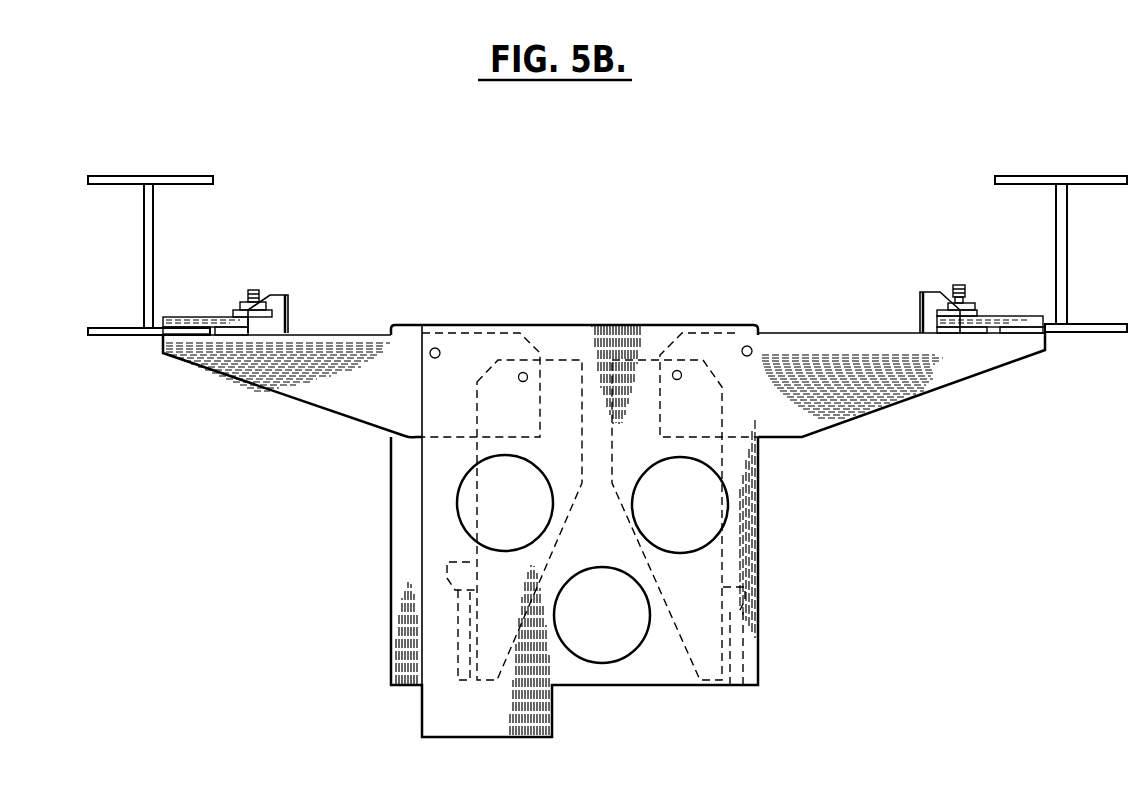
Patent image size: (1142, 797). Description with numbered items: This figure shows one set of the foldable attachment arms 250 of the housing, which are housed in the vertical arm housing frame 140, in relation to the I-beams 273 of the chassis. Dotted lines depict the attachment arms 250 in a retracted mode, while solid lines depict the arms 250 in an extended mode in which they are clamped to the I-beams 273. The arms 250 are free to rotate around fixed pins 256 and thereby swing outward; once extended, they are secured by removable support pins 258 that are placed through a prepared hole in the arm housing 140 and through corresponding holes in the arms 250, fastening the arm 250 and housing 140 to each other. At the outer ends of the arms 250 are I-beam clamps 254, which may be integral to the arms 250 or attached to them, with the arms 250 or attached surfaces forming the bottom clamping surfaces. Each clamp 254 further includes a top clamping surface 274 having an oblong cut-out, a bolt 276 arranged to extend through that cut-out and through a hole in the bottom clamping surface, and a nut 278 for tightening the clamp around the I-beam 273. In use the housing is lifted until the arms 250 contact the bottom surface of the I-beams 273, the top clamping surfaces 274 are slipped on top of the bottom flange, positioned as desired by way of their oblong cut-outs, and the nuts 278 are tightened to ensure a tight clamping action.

The arm housing frame 140 is at (420, 578).
The foldable attachment arms 250 is at (890, 388).
The I-beam clamps 254 is at (303, 278).
The fixed pins 256 is at (521, 382).
The removable support pins 258 is at (437, 348).
The I-beams 273 is at (143, 240).
The top clamping surfaces 274 is at (190, 317).
The bolts 276 is at (252, 289).
The nuts 278 is at (242, 305).